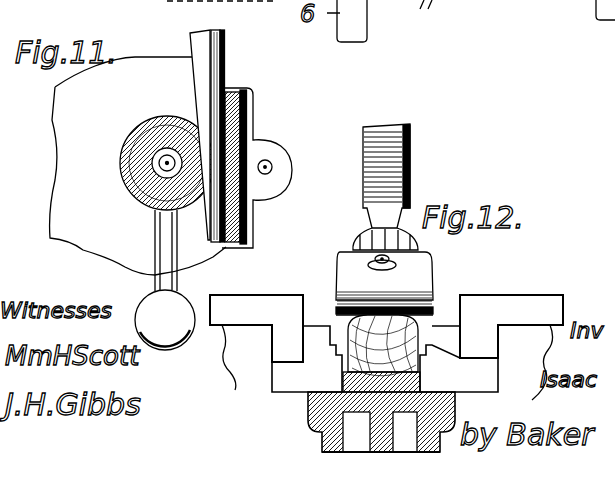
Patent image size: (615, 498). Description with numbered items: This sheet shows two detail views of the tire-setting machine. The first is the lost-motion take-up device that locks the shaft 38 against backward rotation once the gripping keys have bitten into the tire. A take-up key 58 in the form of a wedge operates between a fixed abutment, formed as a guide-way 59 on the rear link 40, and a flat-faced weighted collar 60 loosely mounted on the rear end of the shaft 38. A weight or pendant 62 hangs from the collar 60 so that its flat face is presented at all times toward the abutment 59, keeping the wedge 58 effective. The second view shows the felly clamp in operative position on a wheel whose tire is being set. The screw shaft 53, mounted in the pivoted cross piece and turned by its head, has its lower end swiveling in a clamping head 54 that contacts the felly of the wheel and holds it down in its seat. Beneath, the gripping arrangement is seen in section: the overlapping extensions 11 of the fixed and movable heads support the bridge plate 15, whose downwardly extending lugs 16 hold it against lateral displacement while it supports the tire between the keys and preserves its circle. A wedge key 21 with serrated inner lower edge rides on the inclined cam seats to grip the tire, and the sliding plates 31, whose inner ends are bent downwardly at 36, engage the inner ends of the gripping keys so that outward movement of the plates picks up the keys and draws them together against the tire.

In FIG. 12, the overlapping extensions 11 is at (345, 433).
In FIG. 12, the bridge plate 15 is at (322, 438).
In FIG. 12, the downwardly extending lugs 16 is at (452, 413).
In FIG. 12, the wedge key 21 is at (292, 377).
In FIG. 12, the sliding plates 31 is at (386, 328).
In FIG. 12, the downwardly bent inner end 36 is at (285, 345).
In FIG. 11, the shaft 38 is at (157, 170).
In FIG. 11, the rear link 40 is at (138, 166).
In FIG. 12, the screw shaft 53 is at (410, 153).
In FIG. 12, the clamping head 54 is at (384, 283).
In FIG. 11, the take-up key 58 is at (195, 36).
In FIG. 11, the guide-way 59 is at (227, 123).
In FIG. 11, the weighted collar 60 is at (125, 147).
In FIG. 11, the weight or pendant 62 is at (165, 280).